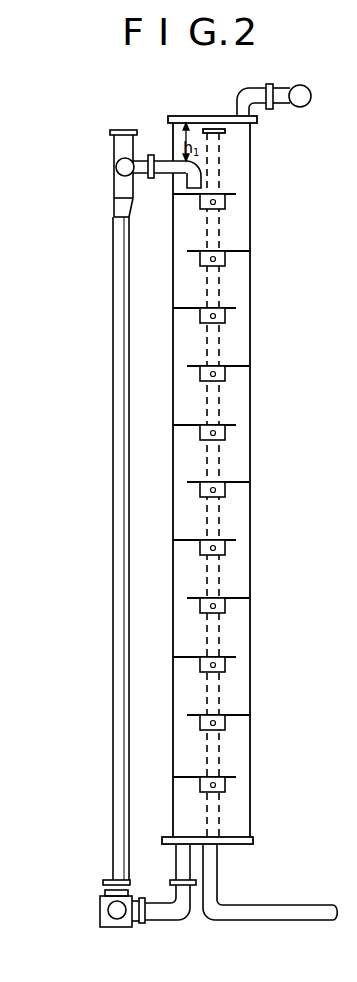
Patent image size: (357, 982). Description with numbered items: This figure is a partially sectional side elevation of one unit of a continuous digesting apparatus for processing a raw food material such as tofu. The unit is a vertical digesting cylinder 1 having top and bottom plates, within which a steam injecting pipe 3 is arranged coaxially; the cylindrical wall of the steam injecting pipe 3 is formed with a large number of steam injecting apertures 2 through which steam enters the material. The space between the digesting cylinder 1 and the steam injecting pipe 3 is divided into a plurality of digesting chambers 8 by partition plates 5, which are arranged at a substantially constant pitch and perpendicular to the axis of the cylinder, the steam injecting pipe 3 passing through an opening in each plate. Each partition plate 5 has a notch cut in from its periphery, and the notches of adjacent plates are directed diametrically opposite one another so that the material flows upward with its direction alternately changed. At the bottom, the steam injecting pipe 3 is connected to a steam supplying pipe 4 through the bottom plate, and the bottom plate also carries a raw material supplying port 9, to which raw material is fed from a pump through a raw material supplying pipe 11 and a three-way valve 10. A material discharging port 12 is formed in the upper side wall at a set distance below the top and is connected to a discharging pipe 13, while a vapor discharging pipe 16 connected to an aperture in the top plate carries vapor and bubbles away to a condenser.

The digesting cylinder 1 is at (251, 703).
The steam injecting apertures 2 is at (222, 505).
The steam injecting pipe 3 is at (223, 574).
The steam supplying pipe 4 is at (283, 908).
The partition plates 5 is at (228, 193).
The digesting chambers 8 is at (232, 630).
The raw material supplying port 9 is at (183, 836).
The three-way valve 10 is at (102, 920).
The raw material supplying pipe 11 is at (157, 915).
The material discharging port 12 is at (165, 174).
The discharging pipe 13 is at (118, 620).
The vapor discharging pipe 16 is at (246, 97).